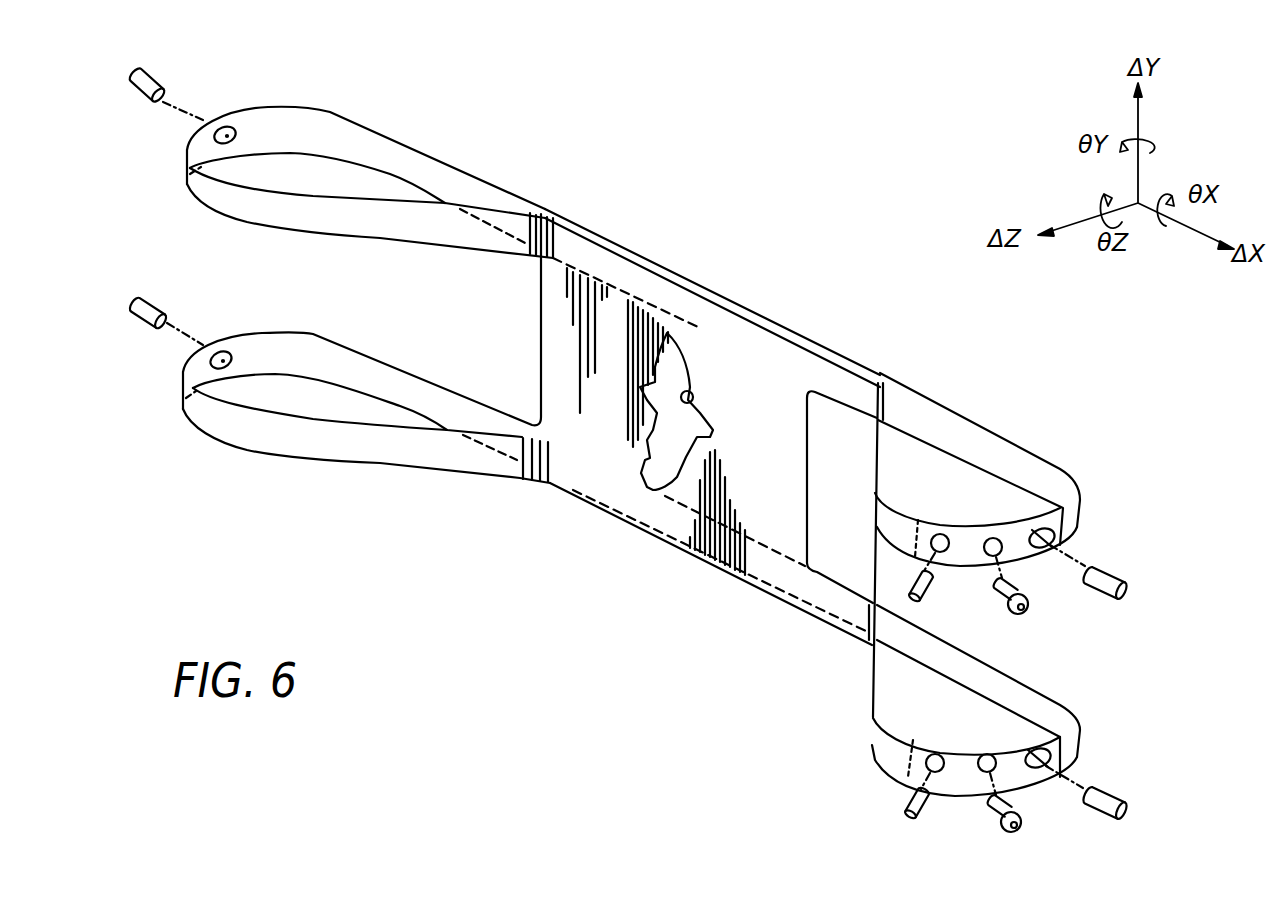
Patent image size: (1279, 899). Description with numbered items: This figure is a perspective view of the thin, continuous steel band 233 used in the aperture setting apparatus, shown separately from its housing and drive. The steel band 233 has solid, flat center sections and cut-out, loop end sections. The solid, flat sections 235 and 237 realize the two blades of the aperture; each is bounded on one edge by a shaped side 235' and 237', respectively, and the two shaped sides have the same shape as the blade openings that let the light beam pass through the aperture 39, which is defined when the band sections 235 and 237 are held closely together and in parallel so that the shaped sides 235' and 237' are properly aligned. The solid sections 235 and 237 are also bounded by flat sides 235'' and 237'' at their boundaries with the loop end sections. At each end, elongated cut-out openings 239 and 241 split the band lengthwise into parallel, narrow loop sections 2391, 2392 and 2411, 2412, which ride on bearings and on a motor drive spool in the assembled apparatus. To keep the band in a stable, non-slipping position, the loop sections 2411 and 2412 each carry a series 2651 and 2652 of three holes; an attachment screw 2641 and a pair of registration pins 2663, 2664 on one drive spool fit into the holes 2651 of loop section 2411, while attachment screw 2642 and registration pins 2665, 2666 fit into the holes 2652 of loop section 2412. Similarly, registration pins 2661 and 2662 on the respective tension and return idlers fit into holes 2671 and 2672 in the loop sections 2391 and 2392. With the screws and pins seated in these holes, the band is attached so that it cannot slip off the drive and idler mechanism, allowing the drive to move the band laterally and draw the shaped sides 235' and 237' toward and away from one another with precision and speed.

The aperture 39 is at (673, 437).
The steel band 233 is at (683, 184).
The solid flat section 235 is at (545, 480).
The shaped side 235' is at (729, 368).
The flat side 235'' is at (475, 269).
The solid flat section 237 is at (734, 538).
The shaped side 237' is at (799, 364).
The flat side 237'' is at (853, 497).
The elongated cut-out opening 239 is at (176, 252).
The loop section 2391 is at (186, 175).
The loop section 2392 is at (183, 410).
The elongated cut-out opening 241 is at (1087, 658).
The loop section 2411 is at (1080, 516).
The loop section 2412 is at (1078, 740).
The attachment screw 2641 is at (1035, 600).
The attachment screw 2642 is at (1000, 818).
The series of three holes 2651 is at (1037, 533).
The series of three holes 2652 is at (1035, 750).
The registration pin 2661 is at (158, 74).
The registration pin 2662 is at (130, 322).
The registration pin 2663 is at (932, 600).
The registration pin 2664 is at (1125, 583).
The registration pin 2665 is at (908, 806).
The registration pin 2666 is at (1127, 803).
The hole 2671 is at (230, 137).
The hole 2672 is at (223, 366).